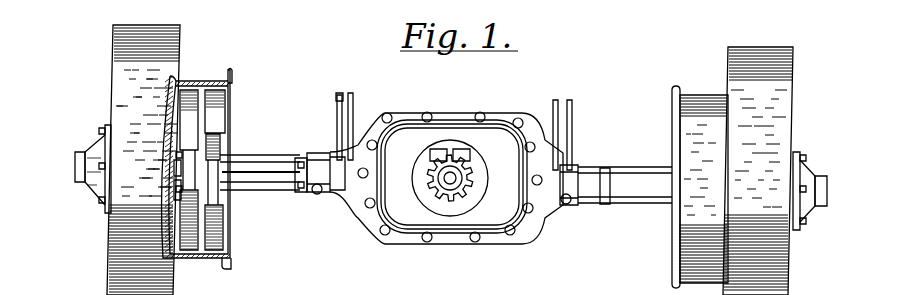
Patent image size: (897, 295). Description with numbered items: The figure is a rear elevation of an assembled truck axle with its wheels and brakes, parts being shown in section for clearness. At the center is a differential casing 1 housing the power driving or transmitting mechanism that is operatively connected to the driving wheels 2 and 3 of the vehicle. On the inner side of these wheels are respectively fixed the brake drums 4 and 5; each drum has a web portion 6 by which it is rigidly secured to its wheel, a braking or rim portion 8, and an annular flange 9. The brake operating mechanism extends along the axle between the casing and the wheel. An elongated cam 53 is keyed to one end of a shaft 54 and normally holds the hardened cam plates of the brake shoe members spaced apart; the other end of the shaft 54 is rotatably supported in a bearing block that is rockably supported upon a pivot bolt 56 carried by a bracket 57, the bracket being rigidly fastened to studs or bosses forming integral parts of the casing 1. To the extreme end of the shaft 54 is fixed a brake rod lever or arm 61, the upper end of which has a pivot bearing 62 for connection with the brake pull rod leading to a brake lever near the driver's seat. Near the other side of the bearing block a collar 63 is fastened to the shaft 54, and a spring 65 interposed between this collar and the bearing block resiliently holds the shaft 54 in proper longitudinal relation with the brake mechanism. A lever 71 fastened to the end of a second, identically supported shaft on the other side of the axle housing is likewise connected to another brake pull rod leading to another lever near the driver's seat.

The differential casing 1 is at (456, 118).
The driving wheel 2 is at (127, 160).
The driving wheel 3 is at (775, 171).
The brake drum 4 is at (197, 83).
The brake drum 5 is at (700, 98).
The web portion 6 is at (174, 201).
The braking or rim portion 8 is at (197, 252).
The annular flange 9 is at (223, 264).
The elongated cam 53 is at (170, 167).
The shaft 54 is at (243, 175).
The pivot bolt 56 is at (317, 195).
The bracket 57 is at (318, 165).
The brake rod lever 61 is at (337, 118).
The pivot bearing 62 is at (337, 97).
The collar 63 is at (300, 172).
The spring 65 is at (302, 193).
The lever 71 is at (353, 114).